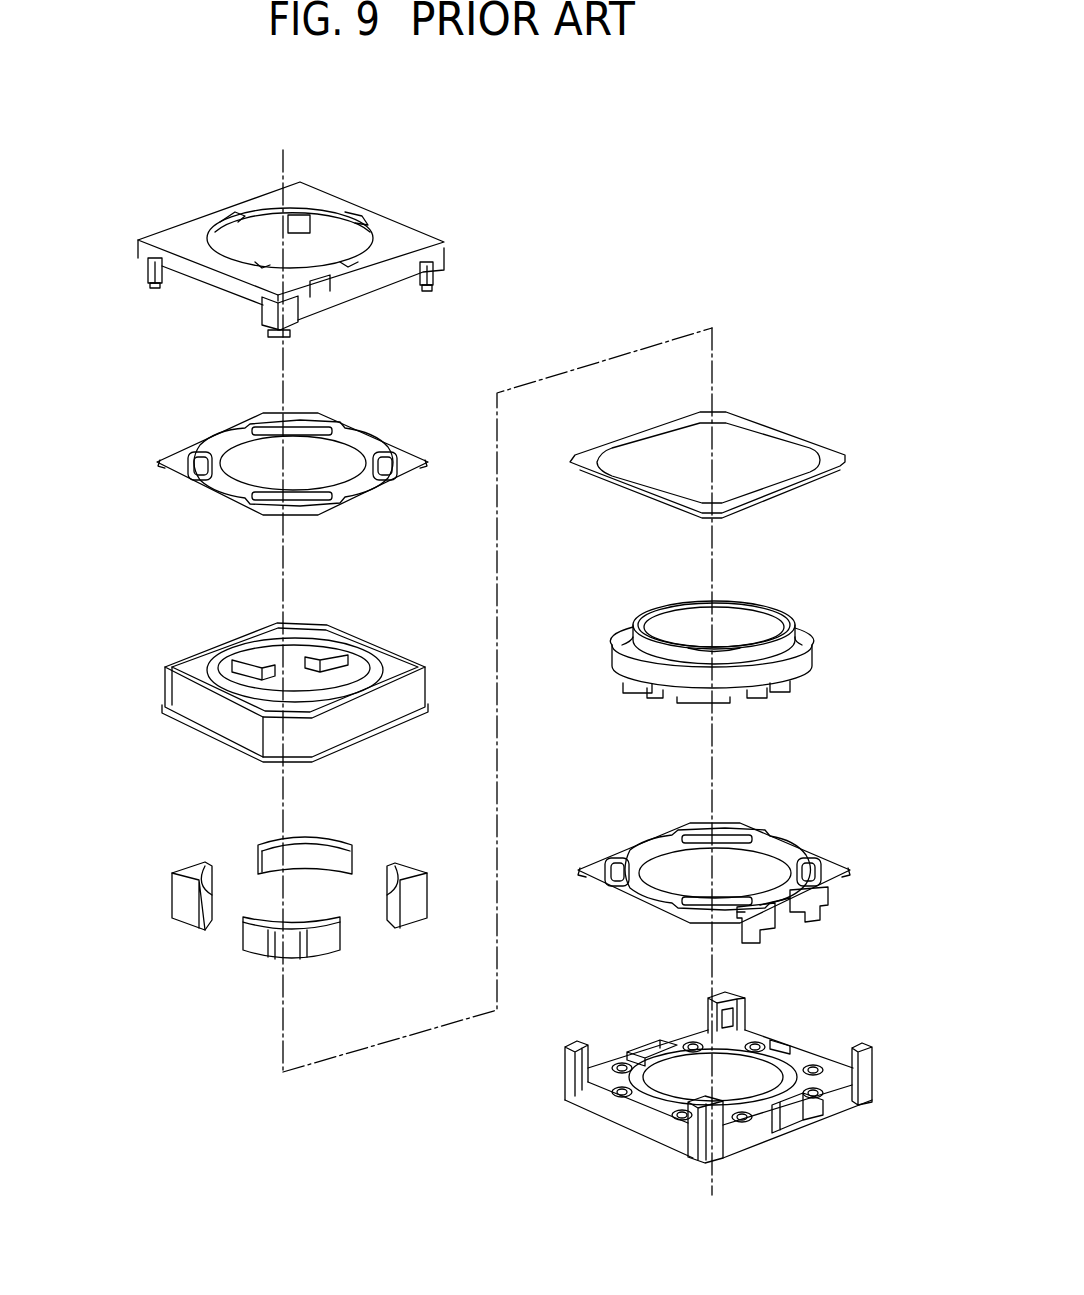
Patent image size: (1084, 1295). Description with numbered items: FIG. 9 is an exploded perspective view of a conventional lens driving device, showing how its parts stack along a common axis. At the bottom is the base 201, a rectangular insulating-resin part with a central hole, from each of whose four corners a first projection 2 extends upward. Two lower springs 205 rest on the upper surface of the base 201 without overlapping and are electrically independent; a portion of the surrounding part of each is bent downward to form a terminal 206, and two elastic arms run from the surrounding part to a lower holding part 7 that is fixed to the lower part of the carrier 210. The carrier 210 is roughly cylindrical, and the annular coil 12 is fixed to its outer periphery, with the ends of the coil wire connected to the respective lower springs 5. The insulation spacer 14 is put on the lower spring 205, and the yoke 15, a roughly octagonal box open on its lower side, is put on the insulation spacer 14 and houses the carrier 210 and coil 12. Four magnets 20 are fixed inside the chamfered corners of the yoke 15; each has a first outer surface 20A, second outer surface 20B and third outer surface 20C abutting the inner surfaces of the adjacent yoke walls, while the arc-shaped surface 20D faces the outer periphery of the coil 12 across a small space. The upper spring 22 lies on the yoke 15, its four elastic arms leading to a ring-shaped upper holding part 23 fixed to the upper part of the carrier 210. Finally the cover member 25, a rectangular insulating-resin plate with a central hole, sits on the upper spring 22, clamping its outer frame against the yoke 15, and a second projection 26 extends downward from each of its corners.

The cover member 25 is at (192, 230).
The second projection 26 is at (140, 258).
The upper holding part 23 is at (217, 452).
The upper spring 22 is at (188, 487).
The yoke 15 is at (192, 670).
The magnet 20 is at (254, 937).
The first outer surface 20A is at (253, 937).
The second outer surface 20B is at (343, 970).
The third outer surface 20C is at (290, 943).
The arc-shaped surface 20D is at (273, 855).
The insulation spacer 14 is at (825, 457).
The carrier 210 is at (780, 605).
The coil 12 is at (742, 623).
The lower holding part 7 is at (778, 858).
The lower spring 205 is at (837, 870).
The terminal 206 is at (765, 920).
The lower spring 5 is at (742, 880).
The first projection 2 is at (865, 1073).
The base 201 is at (813, 1108).